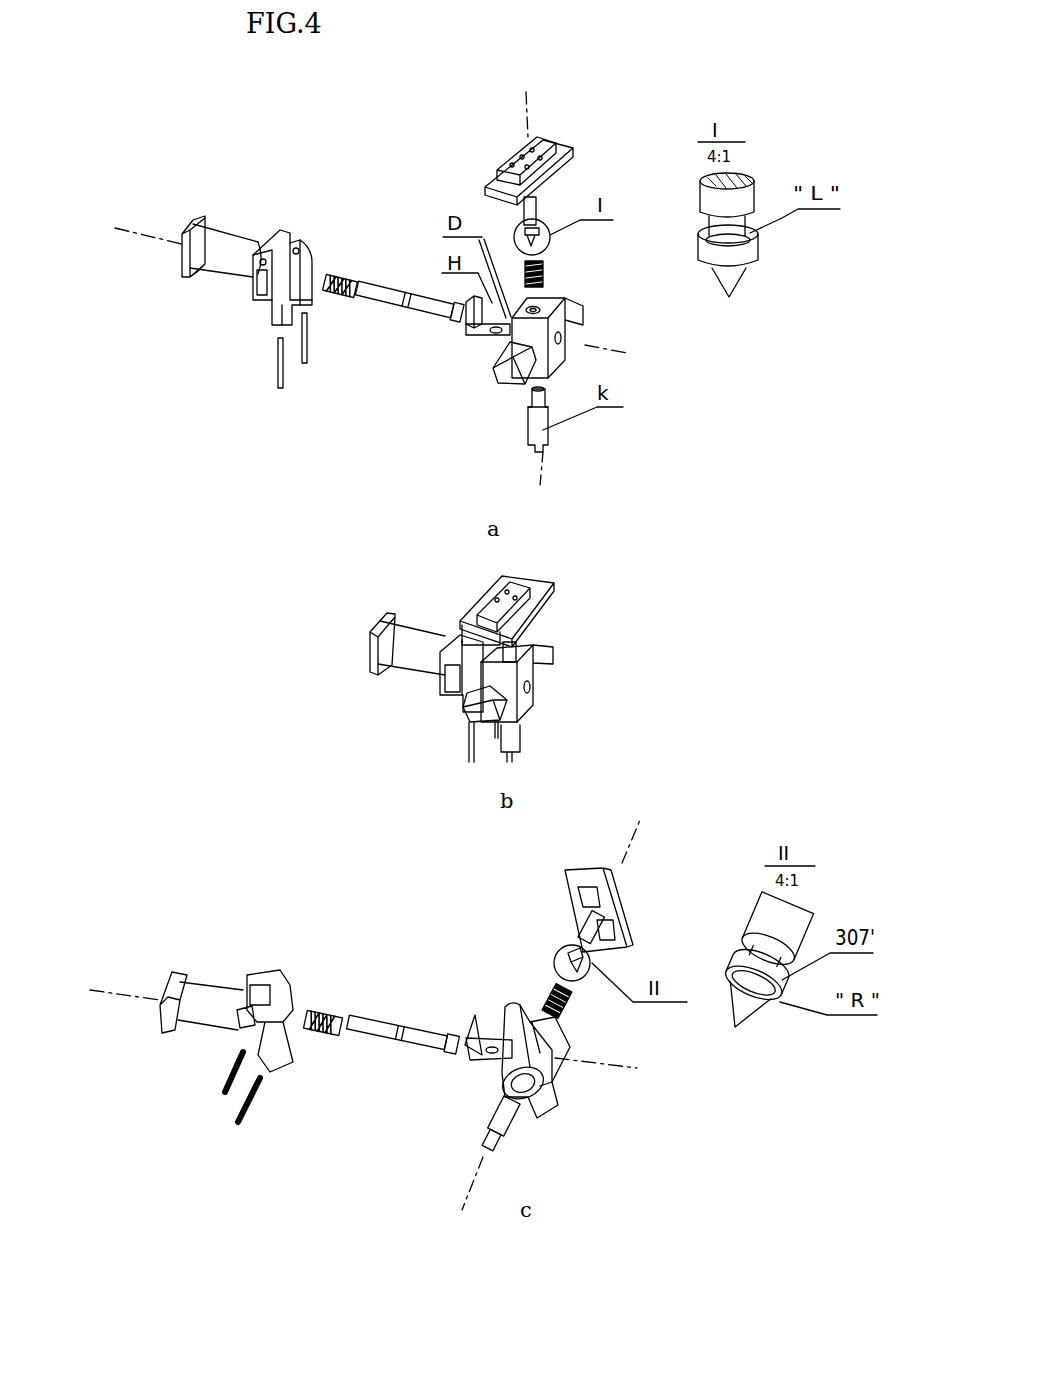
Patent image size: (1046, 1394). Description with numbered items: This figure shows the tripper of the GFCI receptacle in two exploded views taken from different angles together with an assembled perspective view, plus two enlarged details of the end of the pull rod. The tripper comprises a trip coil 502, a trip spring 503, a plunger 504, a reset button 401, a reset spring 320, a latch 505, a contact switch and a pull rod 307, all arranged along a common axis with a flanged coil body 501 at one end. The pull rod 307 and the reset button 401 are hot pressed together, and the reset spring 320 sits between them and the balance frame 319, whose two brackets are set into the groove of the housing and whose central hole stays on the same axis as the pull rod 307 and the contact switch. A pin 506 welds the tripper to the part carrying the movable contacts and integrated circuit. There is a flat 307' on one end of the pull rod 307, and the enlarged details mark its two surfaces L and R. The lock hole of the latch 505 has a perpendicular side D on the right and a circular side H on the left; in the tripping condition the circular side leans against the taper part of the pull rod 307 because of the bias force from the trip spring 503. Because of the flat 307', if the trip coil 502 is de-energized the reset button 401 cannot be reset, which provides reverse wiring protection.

The reset button 401 is at (552, 155).
The pull rod 307 is at (567, 203).
The flat 307' is at (770, 261).
The reset spring 320 is at (576, 262).
The balance frame 319 is at (560, 341).
The flange 501 is at (140, 273).
The trip coil 502 is at (215, 296).
The trip spring 503 is at (303, 344).
The plunger 504 is at (386, 356).
The latch 505 is at (445, 376).
The pin 506 is at (248, 352).